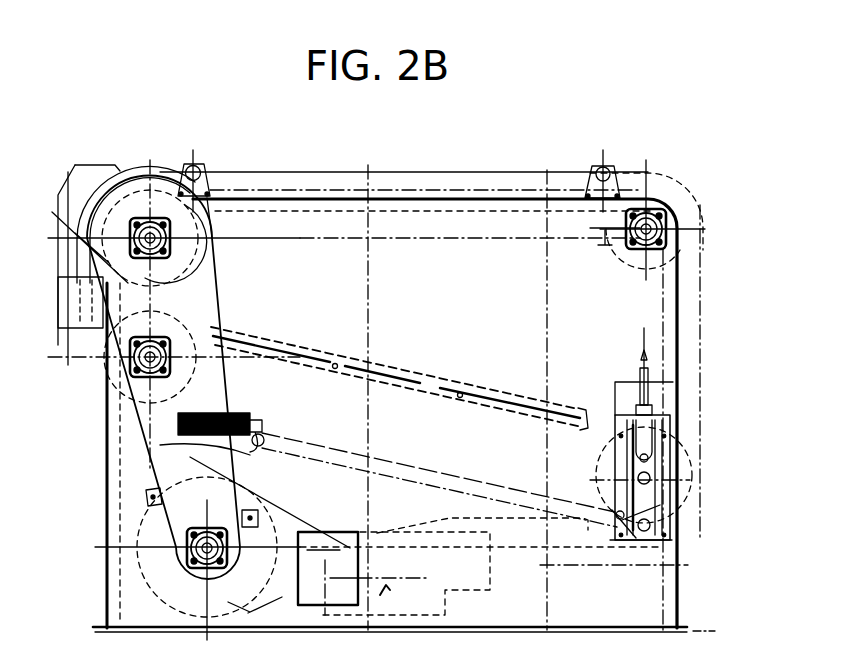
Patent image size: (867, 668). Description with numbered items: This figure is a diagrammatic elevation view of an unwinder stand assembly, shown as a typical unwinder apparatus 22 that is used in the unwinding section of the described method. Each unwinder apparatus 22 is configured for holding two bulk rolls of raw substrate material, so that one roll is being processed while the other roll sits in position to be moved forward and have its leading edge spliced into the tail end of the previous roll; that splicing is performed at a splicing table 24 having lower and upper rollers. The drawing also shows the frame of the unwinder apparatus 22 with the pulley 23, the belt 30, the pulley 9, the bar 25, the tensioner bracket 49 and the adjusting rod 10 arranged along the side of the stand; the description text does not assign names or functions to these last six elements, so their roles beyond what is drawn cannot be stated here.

The unwinder apparatus 22 is at (652, 138).
The drive pulley 23 is at (230, 238).
The belt 30 is at (220, 276).
The splicing table 24 is at (603, 228).
The idler pulley 9 is at (623, 252).
The support bar 25 is at (605, 485).
The tensioner bracket 49 is at (615, 398).
The adjusting rod 10 is at (637, 415).